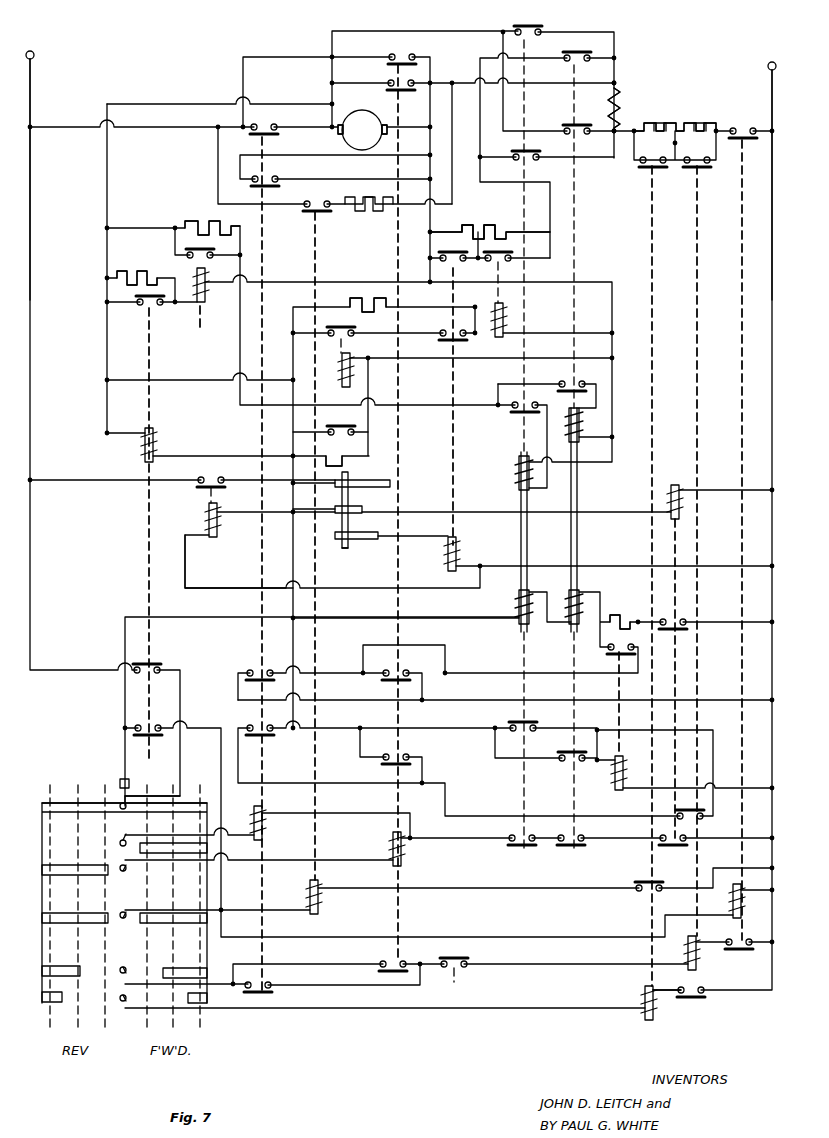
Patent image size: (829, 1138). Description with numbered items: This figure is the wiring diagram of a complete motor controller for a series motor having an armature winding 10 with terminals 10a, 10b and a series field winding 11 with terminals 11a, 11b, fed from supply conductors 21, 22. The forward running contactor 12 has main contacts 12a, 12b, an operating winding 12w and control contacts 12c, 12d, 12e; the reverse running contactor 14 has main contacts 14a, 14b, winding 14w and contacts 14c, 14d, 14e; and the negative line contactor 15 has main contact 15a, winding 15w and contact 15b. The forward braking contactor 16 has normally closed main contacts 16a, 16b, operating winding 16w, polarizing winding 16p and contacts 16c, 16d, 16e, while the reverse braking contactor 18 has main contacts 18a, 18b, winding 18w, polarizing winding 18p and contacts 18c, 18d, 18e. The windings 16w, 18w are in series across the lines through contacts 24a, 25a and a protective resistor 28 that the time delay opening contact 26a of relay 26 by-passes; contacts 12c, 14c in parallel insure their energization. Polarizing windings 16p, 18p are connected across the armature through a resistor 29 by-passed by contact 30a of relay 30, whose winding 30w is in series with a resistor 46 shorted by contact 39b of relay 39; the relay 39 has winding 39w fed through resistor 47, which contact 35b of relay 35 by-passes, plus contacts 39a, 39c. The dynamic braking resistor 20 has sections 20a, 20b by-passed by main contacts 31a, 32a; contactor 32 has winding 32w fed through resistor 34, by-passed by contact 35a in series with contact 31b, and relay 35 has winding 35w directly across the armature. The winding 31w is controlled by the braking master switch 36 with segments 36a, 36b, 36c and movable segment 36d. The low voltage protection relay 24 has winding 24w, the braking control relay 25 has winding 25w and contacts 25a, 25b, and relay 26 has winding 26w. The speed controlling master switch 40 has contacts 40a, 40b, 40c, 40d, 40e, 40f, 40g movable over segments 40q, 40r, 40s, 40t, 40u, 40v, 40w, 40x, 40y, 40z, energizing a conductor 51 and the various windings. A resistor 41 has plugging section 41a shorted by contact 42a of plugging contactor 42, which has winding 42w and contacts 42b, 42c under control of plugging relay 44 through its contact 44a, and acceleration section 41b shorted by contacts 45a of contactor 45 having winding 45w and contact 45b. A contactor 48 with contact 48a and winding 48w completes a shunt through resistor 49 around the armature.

The supply conductor 21 is at (33, 78).
The supply conductor 22 is at (770, 90).
The armature winding 10 is at (358, 120).
The armature terminal 10a is at (340, 134).
The armature terminal 10b is at (384, 134).
The series field winding 11 is at (622, 102).
The field winding terminal 11a is at (616, 82).
The field winding terminal 11b is at (612, 134).
The forward running contact 12a is at (264, 124).
The forward running contact 12b is at (272, 175).
The control circuit contact 12c is at (254, 664).
The control circuit contact 12d is at (254, 720).
The control circuit contact 12e is at (269, 980).
The operating winding 12w is at (264, 824).
The forward running contactor 12 is at (264, 848).
The reverse running contact 14a is at (400, 54).
The reverse running contact 14b is at (393, 80).
The control circuit contact 14c is at (400, 668).
The control circuit contact 14d is at (402, 754).
The control circuit contact 14e is at (390, 960).
The operating winding 14w is at (401, 858).
The reverse running contactor 14 is at (400, 876).
The negative line contact 15a is at (743, 126).
The control circuit contact 15b is at (738, 957).
The operating winding 15w is at (733, 898).
The negative line contactor 15 is at (744, 398).
The forward braking contact 16a is at (538, 28).
The forward braking contact 16b is at (516, 152).
The control circuit contact 16c is at (522, 400).
The control circuit contact 16d is at (518, 722).
The control circuit contact 16e is at (513, 833).
The polarizing winding 16p is at (518, 468).
The operating winding 16w is at (518, 600).
The forward braking contactor 16 is at (529, 542).
The reverse braking contact 18a is at (567, 123).
The reverse braking contact 18b is at (588, 52).
The control circuit contact 18c is at (576, 380).
The control circuit contact 18d is at (566, 752).
The control circuit contact 18e is at (575, 834).
The polarizing winding 18p is at (579, 426).
The operating winding 18w is at (579, 596).
The reverse braking contactor 18 is at (579, 485).
The dynamic braking resistor 20 is at (490, 220).
The resistor section 20a is at (462, 228).
The resistor section 20b is at (497, 225).
The low voltage protection relay 24 is at (208, 500).
The control contact 24a is at (211, 476).
The operating winding 24w is at (217, 528).
The braking control relay 25 is at (680, 552).
The control contact 25a is at (683, 614).
The control contact 25b is at (671, 853).
The operating winding 25w is at (679, 508).
The time delay relay 26 is at (620, 690).
The time delay opening contact 26a is at (614, 658).
The operating winding 26w is at (623, 776).
The protective resistor 28 is at (616, 612).
The resistor 29 is at (199, 212).
The relay 30 is at (464, 517).
The control contact 30a is at (205, 262).
The operating winding 30w is at (205, 298).
The main contact 31a is at (455, 264).
The control contact 31b is at (460, 340).
The operating winding 31w is at (456, 552).
The electromagnetic contactor 32 is at (500, 276).
The main contact 32a is at (504, 252).
The operating winding 32w is at (503, 315).
The protective resistor 34 is at (366, 290).
The relay 35 is at (346, 385).
The control contact 35a is at (348, 338).
The control contact 35b is at (352, 428).
The operating winding 35w is at (350, 369).
The braking master switch 36 is at (335, 523).
The stationary contact segment 36a is at (390, 484).
The stationary contact segment 36b is at (362, 509).
The stationary contact segment 36c is at (378, 534).
The movable contact segment 36d is at (348, 549).
The relay 39 is at (151, 368).
The control contact 39a is at (152, 664).
The control contact 39b is at (146, 308).
The control contact 39c is at (154, 722).
The operating winding 39w is at (153, 440).
The speed controlling master switch 40 is at (124, 891).
The master switch contact 40a is at (132, 780).
The master switch contact 40b is at (123, 810).
The master switch contact 40c is at (120, 843).
The master switch contact 40d is at (123, 872).
The master switch contact 40e is at (123, 919).
The master switch contact 40f is at (126, 960).
The master switch contact 40g is at (122, 1002).
The master switch segment 40q is at (118, 778).
The master switch segment 40r is at (56, 800).
The master switch segment 40s is at (207, 848).
The master switch segment 40t is at (42, 868).
The master switch segment 40u is at (42, 918).
The master switch segment 40v is at (207, 918).
The master switch segment 40w is at (42, 970).
The master switch segment 40x is at (213, 972).
The master switch segment 40y is at (46, 1002).
The master switch segment 40z is at (207, 998).
The resistor 41 is at (675, 107).
The plugging section 41a is at (700, 122).
The acceleration section 41b is at (660, 116).
The plugging contactor 42 is at (699, 398).
The main contact 42a is at (700, 168).
The control circuit contact 42b is at (702, 823).
The control circuit contact 42c is at (692, 998).
The operating winding 42w is at (688, 946).
The plugging relay 44 is at (456, 978).
The plugging relay contact 44a is at (460, 956).
The electromagnetic contactor 45 is at (654, 392).
The main contact 45a is at (656, 168).
The control circuit contact 45b is at (640, 880).
The operating winding 45w is at (645, 1002).
The resistor 46 is at (125, 270).
The resistor 47 is at (342, 452).
The contactor 48 is at (317, 258).
The main contact 48a is at (324, 196).
The operating winding 48w is at (318, 900).
The resistor 49 is at (368, 214).
The conductor 51 is at (290, 566).